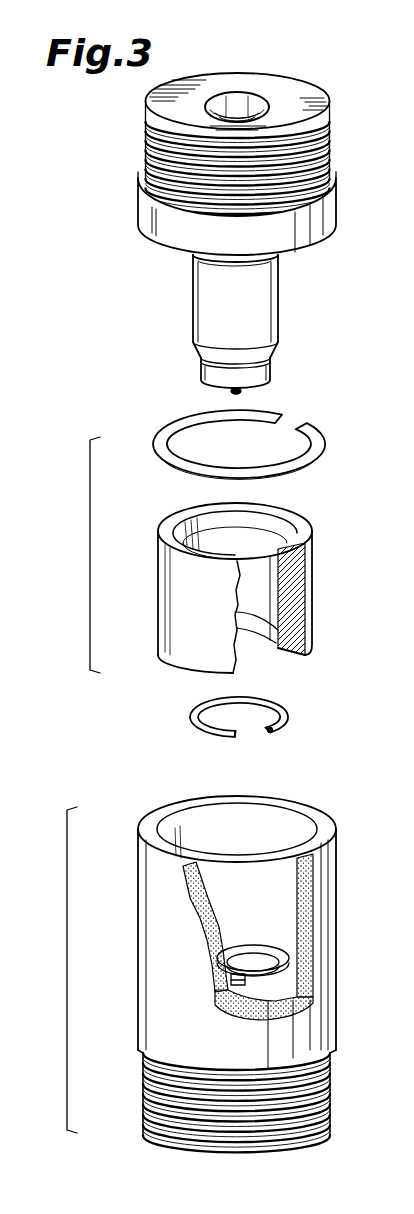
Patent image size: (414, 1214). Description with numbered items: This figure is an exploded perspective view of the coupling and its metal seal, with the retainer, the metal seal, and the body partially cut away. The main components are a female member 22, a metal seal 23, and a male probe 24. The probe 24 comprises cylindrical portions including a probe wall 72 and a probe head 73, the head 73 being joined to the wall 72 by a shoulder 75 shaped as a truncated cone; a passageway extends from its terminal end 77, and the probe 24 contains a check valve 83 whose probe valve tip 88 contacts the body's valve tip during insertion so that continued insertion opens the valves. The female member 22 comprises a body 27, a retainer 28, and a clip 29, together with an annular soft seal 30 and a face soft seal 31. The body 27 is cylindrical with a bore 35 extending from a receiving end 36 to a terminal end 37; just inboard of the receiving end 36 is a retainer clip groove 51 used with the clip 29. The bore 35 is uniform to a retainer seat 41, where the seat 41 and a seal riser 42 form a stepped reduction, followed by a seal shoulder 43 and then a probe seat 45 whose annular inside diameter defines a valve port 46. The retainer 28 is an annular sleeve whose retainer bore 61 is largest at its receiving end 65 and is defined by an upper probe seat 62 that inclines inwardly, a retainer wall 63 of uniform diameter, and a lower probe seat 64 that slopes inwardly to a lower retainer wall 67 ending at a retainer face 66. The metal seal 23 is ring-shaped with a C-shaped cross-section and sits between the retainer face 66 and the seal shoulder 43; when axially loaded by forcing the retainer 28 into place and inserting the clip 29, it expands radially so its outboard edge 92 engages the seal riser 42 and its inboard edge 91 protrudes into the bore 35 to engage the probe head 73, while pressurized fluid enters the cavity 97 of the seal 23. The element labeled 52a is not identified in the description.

The male probe 24 is at (146, 271).
The terminal end 77 is at (300, 92).
The probe valve tip 88 is at (240, 96).
The probe wall 72 is at (279, 292).
The shoulder 75 is at (273, 346).
The probe head 73 is at (275, 371).
The check valve 83 is at (226, 393).
The clip 29 is at (310, 452).
The female member 22 is at (89, 554).
The retainer 28 is at (319, 597).
The retainer bore 61 is at (283, 524).
The upper probe seat 62 is at (303, 523).
The receiving end 65 is at (168, 530).
The annular soft seal 30 is at (282, 582).
The retainer wall 63 is at (283, 617).
The retainer face 66 is at (297, 660).
The face soft seal 31 is at (288, 660).
The lower retainer wall 67 is at (266, 640).
The lower probe seat 64 is at (240, 672).
The metal seal 23 is at (190, 720).
The inboard edge 91 is at (263, 735).
The cavity 97 is at (268, 733).
The outboard edge 92 is at (275, 750).
The body 27 is at (125, 1068).
The bore 35 is at (262, 847).
The receiving end 36 is at (318, 827).
The retainer clip groove 51 is at (152, 815).
The seal riser 42 is at (258, 940).
The seal shoulder 43 is at (276, 945).
The retainer seat 41 is at (287, 962).
The probe seat 45 is at (255, 979).
The passage 52a is at (213, 985).
The valve port 46 is at (282, 1005).
The terminal end 37 is at (290, 1151).